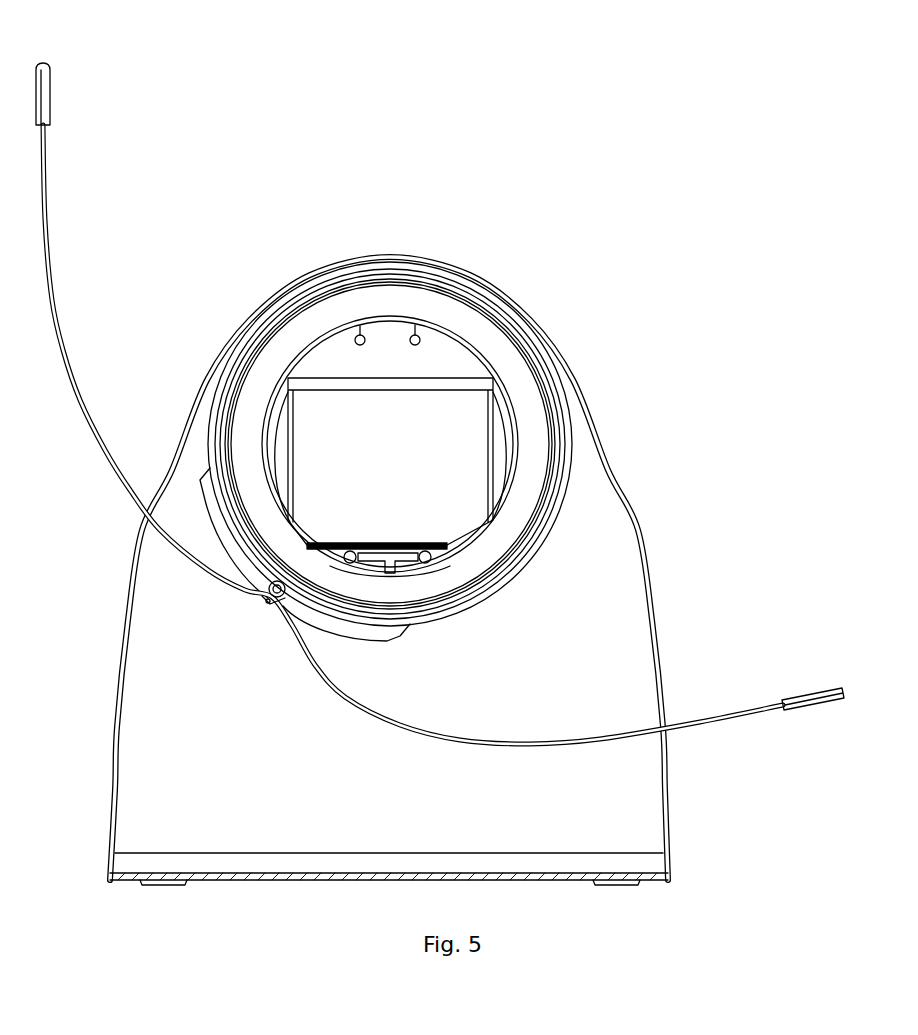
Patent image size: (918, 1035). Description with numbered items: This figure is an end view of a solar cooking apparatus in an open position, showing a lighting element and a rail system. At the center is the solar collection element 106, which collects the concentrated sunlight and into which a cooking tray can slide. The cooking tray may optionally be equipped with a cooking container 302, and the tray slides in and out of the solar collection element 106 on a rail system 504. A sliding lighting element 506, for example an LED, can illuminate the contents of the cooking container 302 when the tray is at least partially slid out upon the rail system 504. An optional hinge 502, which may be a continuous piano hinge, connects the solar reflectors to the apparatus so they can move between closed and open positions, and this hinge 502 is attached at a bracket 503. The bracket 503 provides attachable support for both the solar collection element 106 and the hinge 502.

The solar collection element 106 is at (322, 292).
The cooking container 302 is at (442, 425).
The sliding lighting element 506 is at (422, 314).
The rail system 504 is at (440, 542).
The bracket 503 is at (260, 624).
The hinge 502 is at (380, 658).